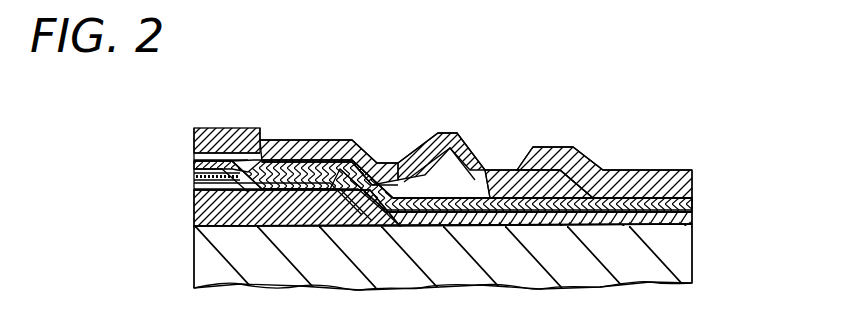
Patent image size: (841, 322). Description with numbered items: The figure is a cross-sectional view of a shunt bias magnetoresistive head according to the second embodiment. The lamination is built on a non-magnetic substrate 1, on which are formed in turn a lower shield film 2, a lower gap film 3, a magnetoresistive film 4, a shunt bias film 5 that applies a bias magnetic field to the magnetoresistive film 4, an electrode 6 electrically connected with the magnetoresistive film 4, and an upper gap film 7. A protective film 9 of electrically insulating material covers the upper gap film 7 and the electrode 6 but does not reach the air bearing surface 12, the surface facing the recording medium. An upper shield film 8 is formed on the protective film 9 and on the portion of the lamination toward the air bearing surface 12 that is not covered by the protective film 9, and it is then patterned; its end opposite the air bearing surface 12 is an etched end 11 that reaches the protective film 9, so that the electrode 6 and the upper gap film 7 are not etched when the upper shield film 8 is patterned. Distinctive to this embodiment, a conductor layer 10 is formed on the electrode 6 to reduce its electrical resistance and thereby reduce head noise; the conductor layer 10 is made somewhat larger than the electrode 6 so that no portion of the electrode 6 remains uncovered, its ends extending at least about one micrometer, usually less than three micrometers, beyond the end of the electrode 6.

The non-magnetic substrate 1 is at (688, 254).
The lower shield film 2 is at (193, 217).
The lower gap film 3 is at (693, 213).
The magnetoresistive film 4 is at (193, 186).
The shunt bias film 5 is at (193, 178).
The electrode 6 is at (693, 199).
The upper gap film 7 is at (193, 155).
The upper shield film 8 is at (243, 128).
The protective film 9 is at (510, 169).
The conductor layer 10 is at (693, 174).
The etched end 11 is at (483, 168).
The air bearing surface 12 is at (193, 262).